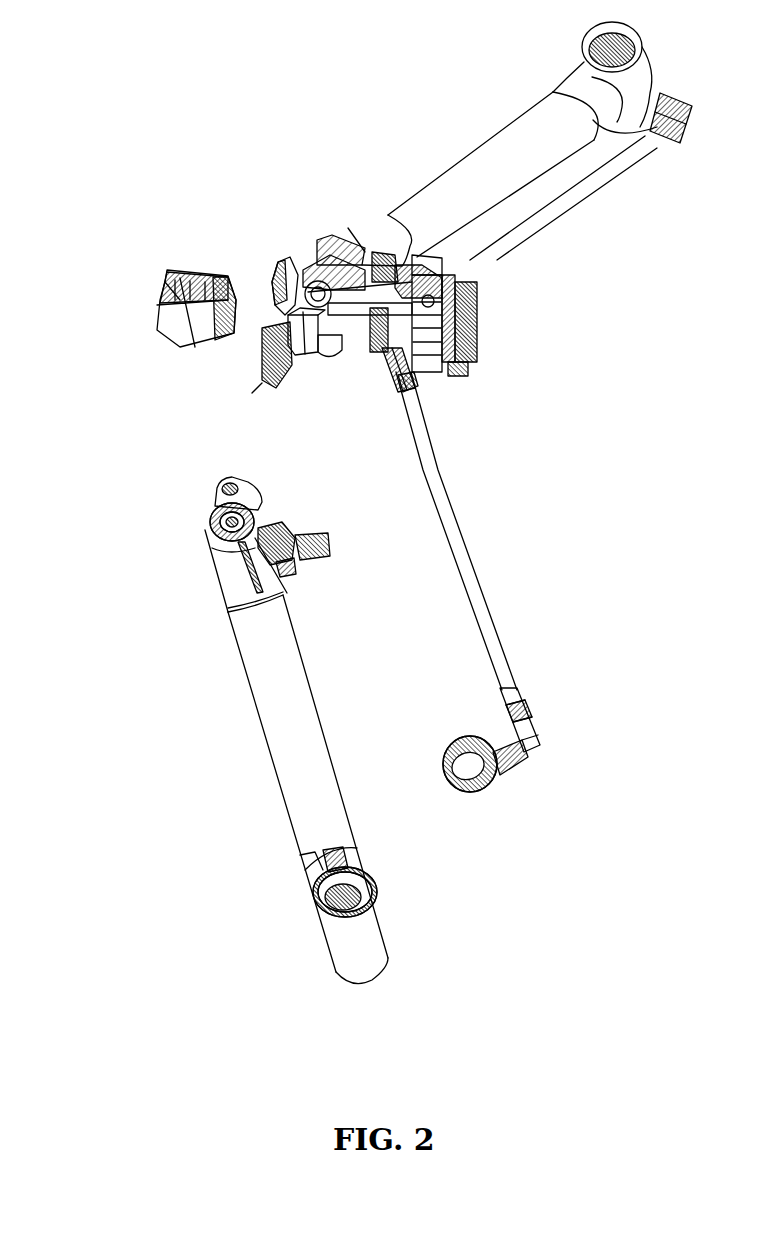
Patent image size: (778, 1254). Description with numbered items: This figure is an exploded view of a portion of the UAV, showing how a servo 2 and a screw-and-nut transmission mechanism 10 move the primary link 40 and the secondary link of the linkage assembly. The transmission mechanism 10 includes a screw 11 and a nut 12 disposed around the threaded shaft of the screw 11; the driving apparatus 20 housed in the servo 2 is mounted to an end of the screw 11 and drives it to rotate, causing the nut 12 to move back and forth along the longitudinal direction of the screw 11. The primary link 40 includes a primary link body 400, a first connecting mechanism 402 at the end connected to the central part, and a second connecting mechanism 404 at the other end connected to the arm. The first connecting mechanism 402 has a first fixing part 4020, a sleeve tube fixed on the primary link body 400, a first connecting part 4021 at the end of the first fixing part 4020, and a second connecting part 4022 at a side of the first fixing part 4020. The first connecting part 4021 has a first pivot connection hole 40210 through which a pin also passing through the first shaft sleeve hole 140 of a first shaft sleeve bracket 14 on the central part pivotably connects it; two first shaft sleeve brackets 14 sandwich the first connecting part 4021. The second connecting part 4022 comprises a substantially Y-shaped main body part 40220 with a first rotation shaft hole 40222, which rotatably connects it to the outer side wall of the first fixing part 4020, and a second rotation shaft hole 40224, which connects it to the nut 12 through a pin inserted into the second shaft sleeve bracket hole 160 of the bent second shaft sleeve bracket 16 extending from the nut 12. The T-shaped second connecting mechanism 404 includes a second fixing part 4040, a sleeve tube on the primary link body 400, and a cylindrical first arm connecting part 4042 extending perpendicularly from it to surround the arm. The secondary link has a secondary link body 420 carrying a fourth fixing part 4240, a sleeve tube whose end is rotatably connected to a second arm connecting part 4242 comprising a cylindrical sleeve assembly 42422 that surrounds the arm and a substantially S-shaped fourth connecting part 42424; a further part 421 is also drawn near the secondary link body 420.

The servo 2 is at (197, 242).
The driving apparatus 20 is at (165, 282).
The first shaft sleeve bracket 14 is at (267, 357).
The first shaft sleeve hole 140 is at (318, 360).
The screw 11 is at (342, 358).
The nut 12 is at (372, 355).
The transmission mechanism 10 is at (357, 370).
The second shaft sleeve bracket 16 is at (477, 337).
The second shaft sleeve bracket hole 160 is at (466, 370).
The secondary link body 420 is at (468, 548).
The rod joint 421 is at (417, 380).
The fourth fixing part 4240 is at (530, 703).
The second arm connecting part 4242 is at (482, 821).
The sleeve assembly 42422 is at (457, 790).
The fourth connecting part 42424 is at (513, 777).
The first connecting mechanism 402 is at (266, 558).
The first connecting part 4021 is at (184, 503).
The first pivot connection hole 40210 is at (220, 485).
The first fixing part 4020 is at (210, 568).
The second connecting part 4022 is at (338, 524).
The first rotation shaft hole 40222 is at (263, 525).
The second rotation shaft hole 40224 is at (314, 540).
The main body part 40220 is at (303, 565).
The second connecting mechanism 404 is at (282, 789).
The primary link body 400 is at (300, 737).
The second fixing part 4040 is at (312, 853).
The first arm connecting part 4042 is at (316, 873).
The primary link 40 is at (188, 953).